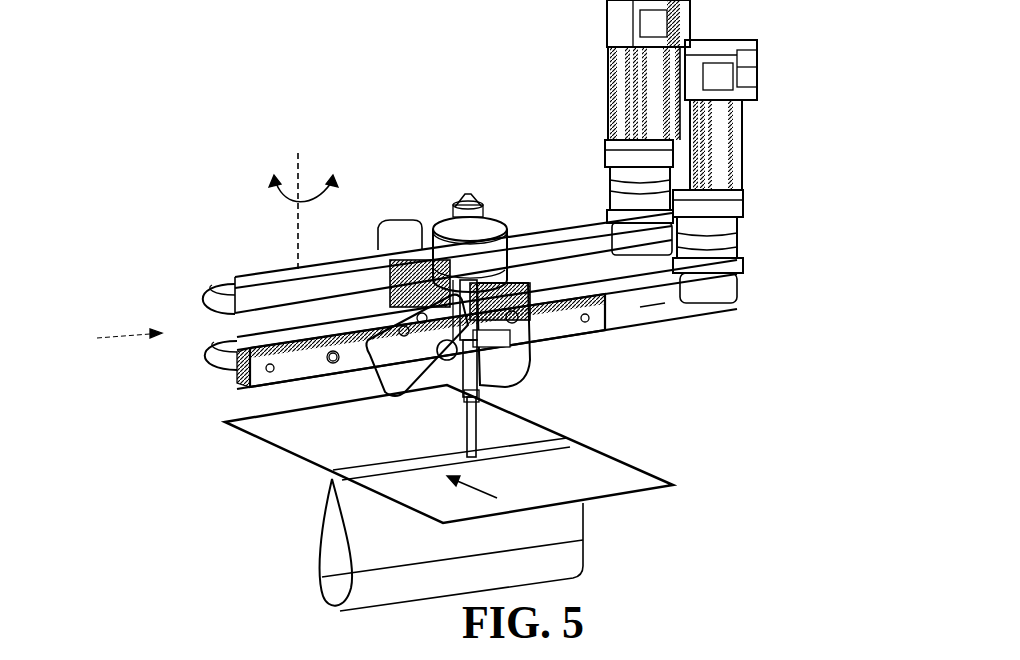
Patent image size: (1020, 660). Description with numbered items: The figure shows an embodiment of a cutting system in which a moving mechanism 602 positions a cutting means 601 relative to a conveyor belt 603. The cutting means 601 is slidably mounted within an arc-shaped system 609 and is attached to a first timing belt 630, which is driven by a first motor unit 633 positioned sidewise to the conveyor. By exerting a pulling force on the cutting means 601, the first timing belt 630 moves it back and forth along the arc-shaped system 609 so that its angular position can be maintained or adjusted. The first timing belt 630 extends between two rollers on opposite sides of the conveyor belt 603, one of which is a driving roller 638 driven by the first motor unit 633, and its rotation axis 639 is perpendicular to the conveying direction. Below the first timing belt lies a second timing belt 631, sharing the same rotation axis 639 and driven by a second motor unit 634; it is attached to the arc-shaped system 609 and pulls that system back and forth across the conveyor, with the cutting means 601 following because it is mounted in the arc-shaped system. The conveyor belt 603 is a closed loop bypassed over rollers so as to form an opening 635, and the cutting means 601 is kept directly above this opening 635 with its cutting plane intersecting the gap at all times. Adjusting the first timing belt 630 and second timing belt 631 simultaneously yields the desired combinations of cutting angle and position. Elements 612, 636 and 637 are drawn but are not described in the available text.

The cutting means 601 is at (431, 295).
The moving mechanism 602 is at (109, 340).
The conveyor belt 603 is at (677, 483).
The arc-shaped system 609 is at (373, 350).
The tool spindle 612 is at (478, 424).
The first timing belt 630 is at (196, 297).
The second timing belt 631 is at (196, 366).
The first motor unit 633 is at (608, 80).
The second motor unit 634 is at (718, 145).
The opening 635 is at (330, 480).
The front plate 636 is at (250, 386).
The arm end bracket 637 is at (708, 305).
The driving roller 638 is at (649, 300).
The rotation axis 639 is at (272, 193).